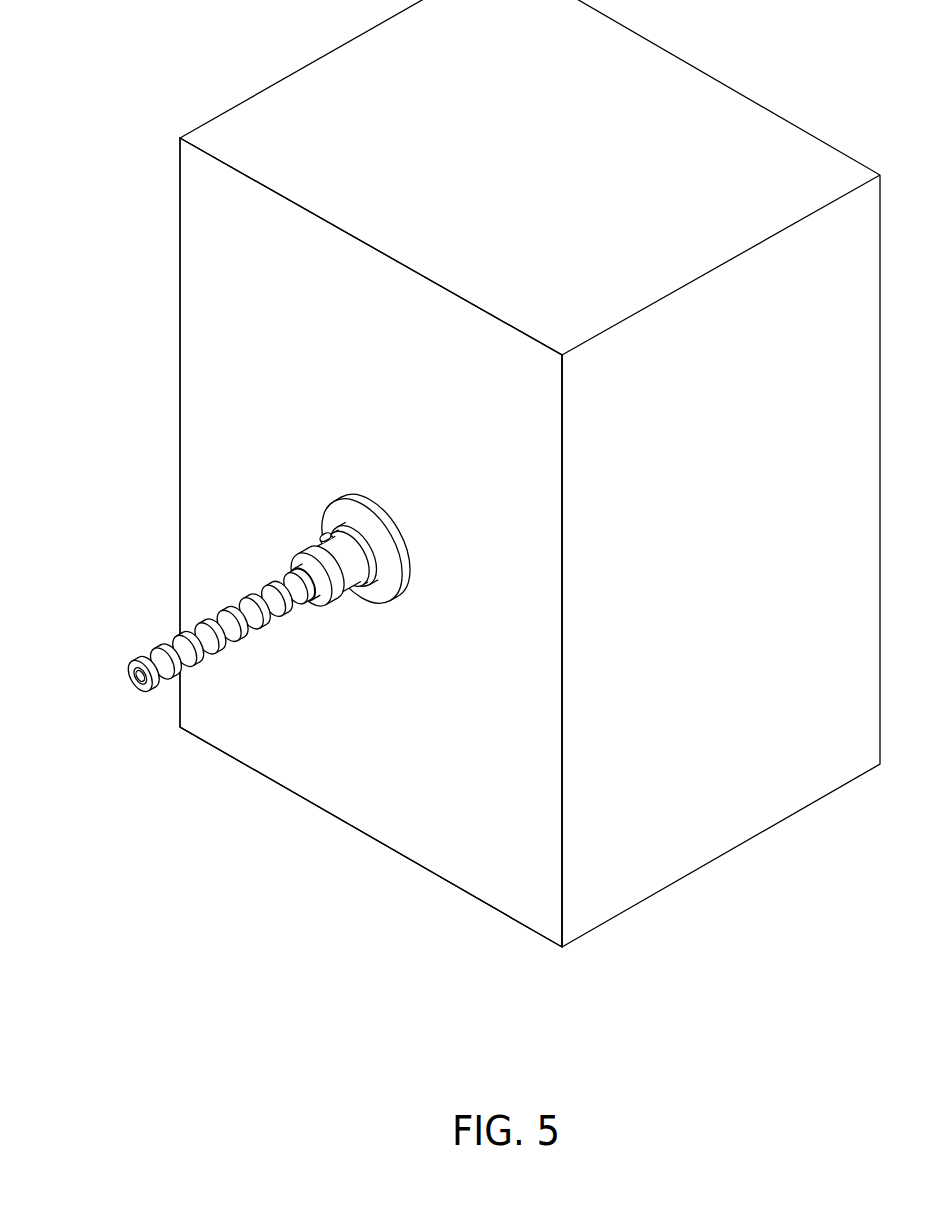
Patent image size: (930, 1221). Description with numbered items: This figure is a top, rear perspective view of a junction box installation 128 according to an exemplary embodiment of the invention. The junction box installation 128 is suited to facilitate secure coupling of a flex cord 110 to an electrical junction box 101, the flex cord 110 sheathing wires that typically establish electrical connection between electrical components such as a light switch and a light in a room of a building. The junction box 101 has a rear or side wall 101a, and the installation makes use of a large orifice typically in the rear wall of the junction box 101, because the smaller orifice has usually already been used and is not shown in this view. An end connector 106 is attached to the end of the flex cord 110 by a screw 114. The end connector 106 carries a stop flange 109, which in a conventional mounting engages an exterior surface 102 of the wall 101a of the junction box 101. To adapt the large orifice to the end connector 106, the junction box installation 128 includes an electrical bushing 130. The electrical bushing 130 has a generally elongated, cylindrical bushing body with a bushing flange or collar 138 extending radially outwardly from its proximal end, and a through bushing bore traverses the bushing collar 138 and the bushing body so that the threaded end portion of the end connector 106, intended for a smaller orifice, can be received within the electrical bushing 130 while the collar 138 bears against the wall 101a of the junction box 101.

The electrical junction box 101 is at (157, 266).
The rear or side wall 101a is at (198, 346).
The exterior surface 102 is at (198, 390).
The electrical bushing 130 is at (370, 480).
The bushing flange or collar 138 is at (385, 532).
The stop flange 109 is at (383, 549).
The end connector 106 is at (343, 583).
The screw 114 is at (322, 538).
The junction box installation 128 is at (134, 561).
The flex cord 110 is at (286, 613).